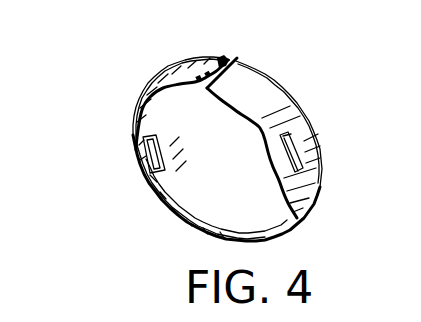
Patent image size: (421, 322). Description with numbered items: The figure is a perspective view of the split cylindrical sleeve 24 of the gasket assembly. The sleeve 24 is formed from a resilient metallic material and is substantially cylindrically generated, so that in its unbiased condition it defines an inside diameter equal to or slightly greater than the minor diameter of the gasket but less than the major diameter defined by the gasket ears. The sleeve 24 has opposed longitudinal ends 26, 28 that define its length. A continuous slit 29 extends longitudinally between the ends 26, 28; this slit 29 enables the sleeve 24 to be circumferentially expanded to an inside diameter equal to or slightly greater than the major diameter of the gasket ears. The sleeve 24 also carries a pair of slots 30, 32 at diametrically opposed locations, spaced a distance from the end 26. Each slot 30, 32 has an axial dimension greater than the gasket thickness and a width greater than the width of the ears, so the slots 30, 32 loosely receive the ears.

The sleeve 24 is at (102, 105).
The longitudinal end 26 is at (200, 229).
The longitudinal end 28 is at (300, 106).
The slit 29 is at (222, 57).
The slot 30 is at (288, 146).
The slot 32 is at (146, 169).